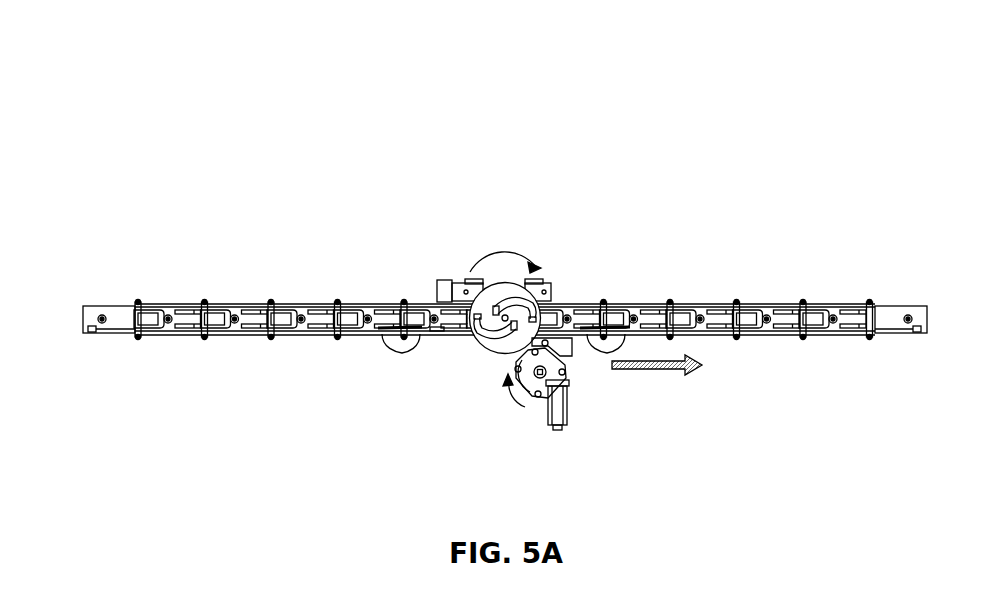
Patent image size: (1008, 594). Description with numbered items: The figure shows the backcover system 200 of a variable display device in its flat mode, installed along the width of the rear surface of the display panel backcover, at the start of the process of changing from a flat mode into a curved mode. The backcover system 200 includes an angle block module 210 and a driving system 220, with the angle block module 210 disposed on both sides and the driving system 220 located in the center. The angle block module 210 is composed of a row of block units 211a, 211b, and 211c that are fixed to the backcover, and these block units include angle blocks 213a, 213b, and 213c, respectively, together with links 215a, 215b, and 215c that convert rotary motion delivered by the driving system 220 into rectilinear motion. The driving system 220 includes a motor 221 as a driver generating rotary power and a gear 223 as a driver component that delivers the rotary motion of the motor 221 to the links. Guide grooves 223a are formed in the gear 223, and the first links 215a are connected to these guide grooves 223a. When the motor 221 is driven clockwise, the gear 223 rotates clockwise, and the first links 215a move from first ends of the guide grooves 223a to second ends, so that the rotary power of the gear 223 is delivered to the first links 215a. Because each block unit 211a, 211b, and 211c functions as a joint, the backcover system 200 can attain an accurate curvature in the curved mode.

The backcover system 200 is at (762, 76).
The angle block module 210 is at (757, 340).
The first block unit 211a is at (640, 88).
The first angle block 213a is at (572, 307).
The first links 215a is at (593, 307).
The second block unit 211b is at (713, 170).
The second angle block 213b is at (647, 307).
The second links 215b is at (693, 307).
The third block unit 211c is at (830, 207).
The third angle block 213c is at (773, 307).
The third links 215c is at (797, 307).
The driving system 220 is at (460, 376).
The motor 221 is at (567, 378).
The gear 223 is at (500, 290).
The guide grooves 223a is at (516, 283).